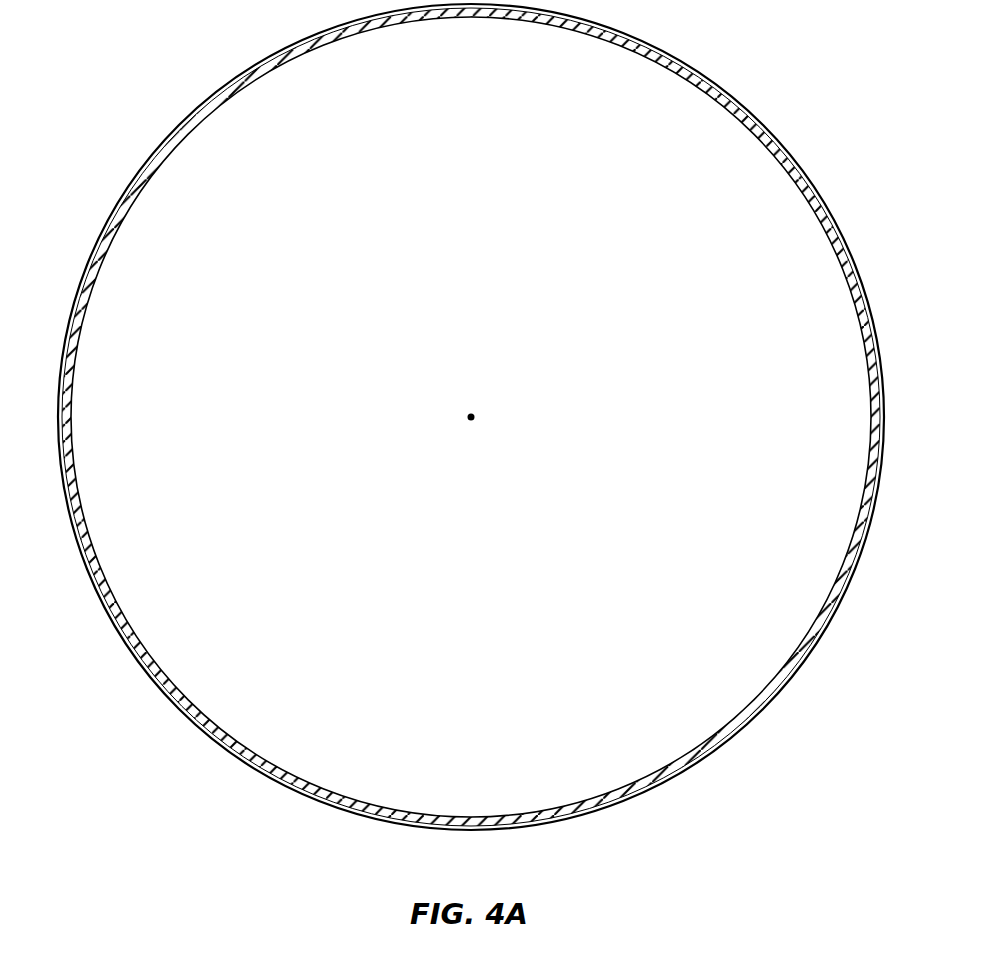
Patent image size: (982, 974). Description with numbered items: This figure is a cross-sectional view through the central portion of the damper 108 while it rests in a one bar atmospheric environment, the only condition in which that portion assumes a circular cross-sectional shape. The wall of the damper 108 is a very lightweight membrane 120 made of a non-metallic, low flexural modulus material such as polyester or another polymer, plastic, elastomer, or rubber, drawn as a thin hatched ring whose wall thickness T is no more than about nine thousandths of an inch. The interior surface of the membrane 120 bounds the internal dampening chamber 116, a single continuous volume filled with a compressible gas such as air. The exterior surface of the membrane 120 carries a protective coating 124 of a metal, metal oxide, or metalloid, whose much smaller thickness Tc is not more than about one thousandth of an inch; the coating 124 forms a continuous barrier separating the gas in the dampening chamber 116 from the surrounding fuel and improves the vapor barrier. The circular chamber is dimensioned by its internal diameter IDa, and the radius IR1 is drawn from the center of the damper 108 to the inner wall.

The damper 108 is at (145, 96).
The internal dampening chamber 116 is at (850, 552).
The membrane 120 is at (803, 168).
The protective coating 124 is at (726, 89).
The membrane thickness T is at (127, 280).
The coating thickness Tc is at (40, 302).
The internal diameter of the damper IDa is at (111, 592).
The inner radius IR1 is at (471, 417).